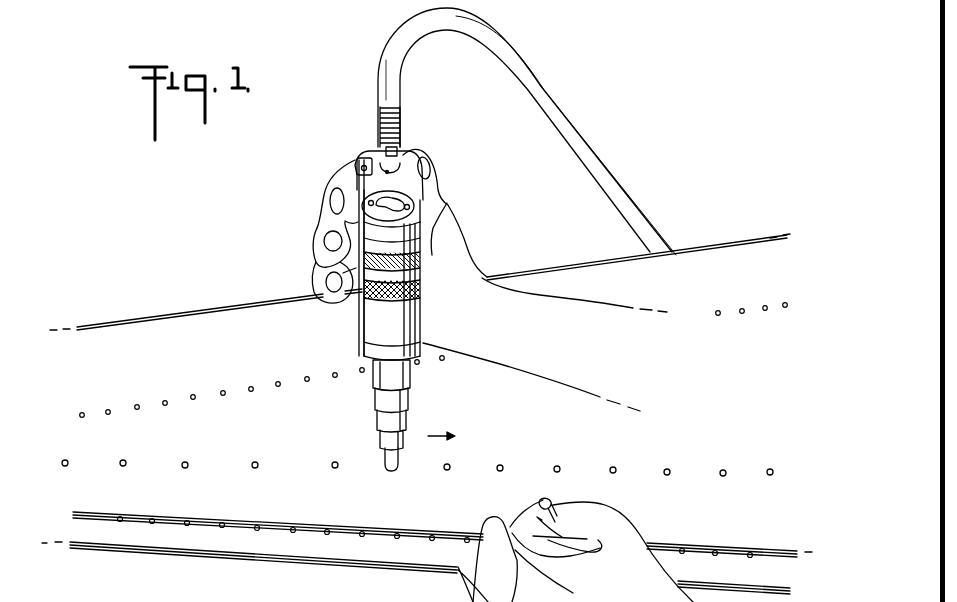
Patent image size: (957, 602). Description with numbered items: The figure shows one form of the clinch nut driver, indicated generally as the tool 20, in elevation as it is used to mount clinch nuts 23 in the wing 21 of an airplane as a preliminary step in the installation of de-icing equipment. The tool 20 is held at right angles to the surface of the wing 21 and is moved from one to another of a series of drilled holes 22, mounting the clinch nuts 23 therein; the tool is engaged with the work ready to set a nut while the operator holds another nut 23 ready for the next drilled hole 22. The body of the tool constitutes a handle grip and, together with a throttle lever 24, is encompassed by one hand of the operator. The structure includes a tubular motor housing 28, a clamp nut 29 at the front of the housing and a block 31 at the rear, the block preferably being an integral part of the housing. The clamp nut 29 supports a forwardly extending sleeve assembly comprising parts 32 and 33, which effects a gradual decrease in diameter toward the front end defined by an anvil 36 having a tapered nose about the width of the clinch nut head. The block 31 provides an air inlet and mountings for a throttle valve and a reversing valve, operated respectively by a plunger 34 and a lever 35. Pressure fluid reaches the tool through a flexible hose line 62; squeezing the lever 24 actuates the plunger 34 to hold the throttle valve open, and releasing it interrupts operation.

The tool 20 is at (366, 142).
The wing 21 is at (175, 326).
The drilled holes 22 is at (556, 466).
The clinch nuts 23 is at (250, 462).
The throttle lever 24 is at (358, 198).
The tubular motor housing 28 is at (375, 309).
The clamp nut 29 is at (372, 343).
The block 31 is at (398, 183).
The sleeve assembly part 32 is at (385, 375).
The sleeve 33 is at (386, 418).
The plunger 34 is at (357, 163).
The lever 35 is at (412, 211).
The anvil 36 is at (386, 466).
The flexible hose line 62 is at (556, 121).